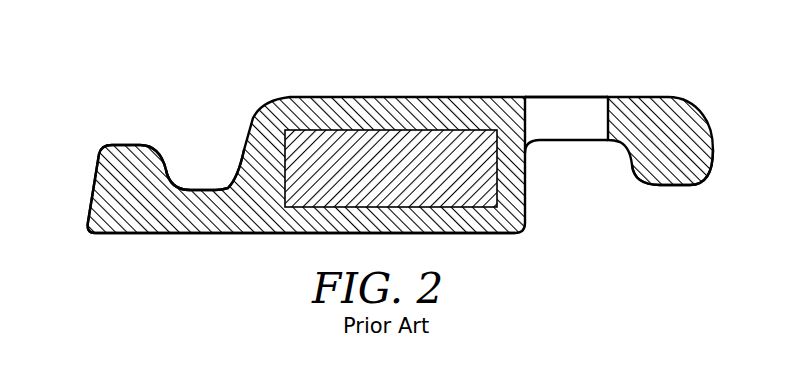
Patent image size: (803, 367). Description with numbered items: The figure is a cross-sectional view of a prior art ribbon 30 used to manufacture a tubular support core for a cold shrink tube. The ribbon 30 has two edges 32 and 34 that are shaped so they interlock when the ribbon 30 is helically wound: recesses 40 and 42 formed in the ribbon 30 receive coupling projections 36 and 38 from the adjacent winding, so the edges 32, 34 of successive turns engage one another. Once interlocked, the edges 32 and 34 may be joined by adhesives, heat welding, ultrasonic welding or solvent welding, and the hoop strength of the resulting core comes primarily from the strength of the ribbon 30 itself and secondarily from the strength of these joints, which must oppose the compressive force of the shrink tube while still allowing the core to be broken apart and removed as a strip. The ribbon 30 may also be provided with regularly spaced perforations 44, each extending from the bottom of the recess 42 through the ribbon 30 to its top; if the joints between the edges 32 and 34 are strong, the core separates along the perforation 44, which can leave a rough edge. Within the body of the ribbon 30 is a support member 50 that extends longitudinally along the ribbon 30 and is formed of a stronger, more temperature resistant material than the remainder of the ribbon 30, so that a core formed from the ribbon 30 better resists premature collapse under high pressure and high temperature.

The ribbon 30 is at (405, 97).
The edge 32 is at (82, 218).
The edge 34 is at (690, 107).
The coupling projection 36 is at (122, 142).
The coupling projection 38 is at (672, 185).
The recess 40 is at (203, 190).
The recess 42 is at (568, 140).
The perforation 44 is at (589, 110).
The support member 50 is at (466, 138).